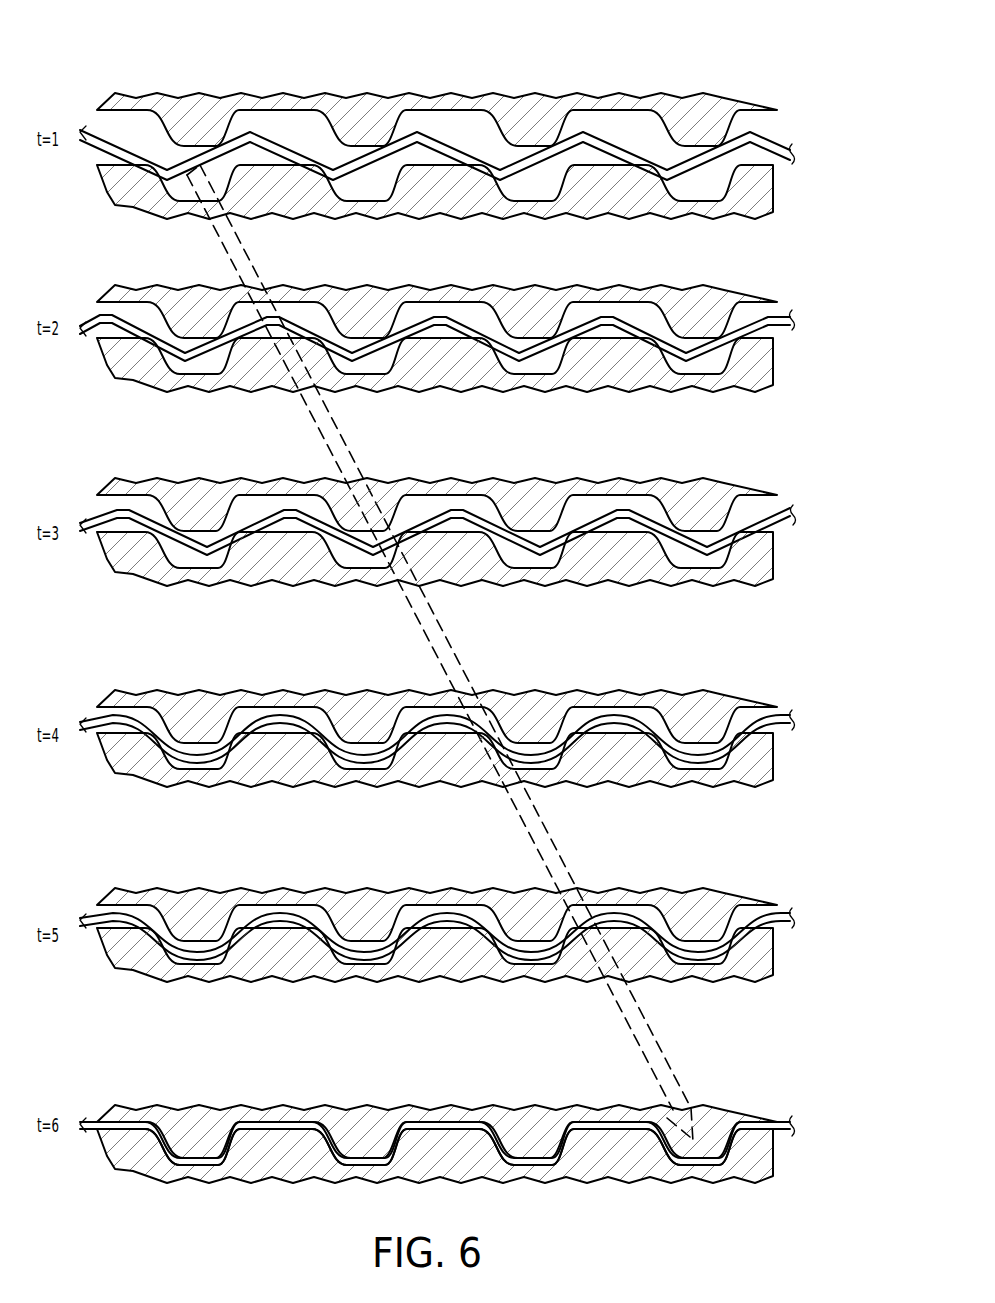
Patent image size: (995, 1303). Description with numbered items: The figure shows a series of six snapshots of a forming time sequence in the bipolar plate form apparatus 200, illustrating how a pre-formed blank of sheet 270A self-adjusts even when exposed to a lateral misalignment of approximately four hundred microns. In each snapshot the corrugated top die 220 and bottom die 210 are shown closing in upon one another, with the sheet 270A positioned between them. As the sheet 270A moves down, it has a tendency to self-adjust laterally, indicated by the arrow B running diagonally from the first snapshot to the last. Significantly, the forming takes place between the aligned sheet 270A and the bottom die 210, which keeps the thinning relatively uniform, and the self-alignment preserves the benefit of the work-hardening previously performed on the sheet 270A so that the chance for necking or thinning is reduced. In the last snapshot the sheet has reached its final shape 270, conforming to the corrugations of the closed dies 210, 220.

The bipolar plate form apparatus 200 is at (196, 60).
The top die 220 is at (772, 102).
The bottom die 210 is at (776, 178).
The sheet 270A is at (788, 138).
The final shape 270 is at (784, 1122).
The arrow B is at (447, 633).